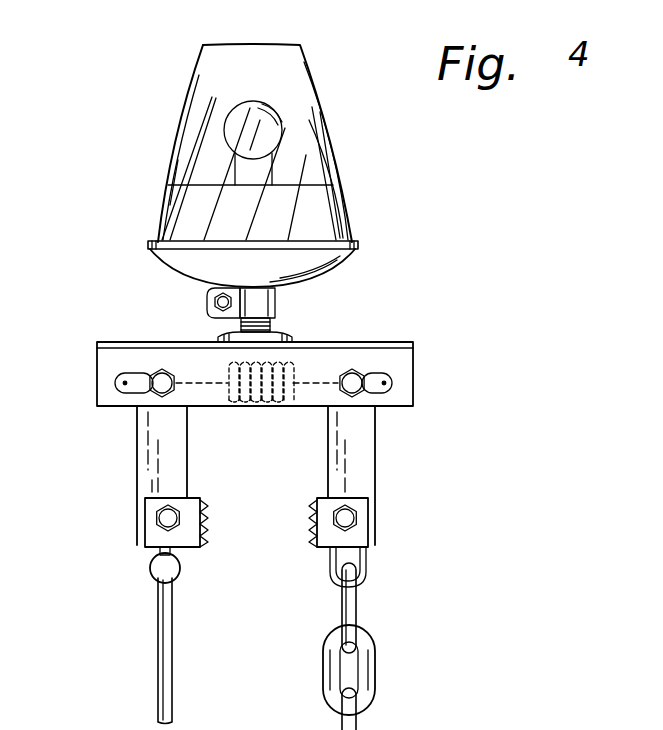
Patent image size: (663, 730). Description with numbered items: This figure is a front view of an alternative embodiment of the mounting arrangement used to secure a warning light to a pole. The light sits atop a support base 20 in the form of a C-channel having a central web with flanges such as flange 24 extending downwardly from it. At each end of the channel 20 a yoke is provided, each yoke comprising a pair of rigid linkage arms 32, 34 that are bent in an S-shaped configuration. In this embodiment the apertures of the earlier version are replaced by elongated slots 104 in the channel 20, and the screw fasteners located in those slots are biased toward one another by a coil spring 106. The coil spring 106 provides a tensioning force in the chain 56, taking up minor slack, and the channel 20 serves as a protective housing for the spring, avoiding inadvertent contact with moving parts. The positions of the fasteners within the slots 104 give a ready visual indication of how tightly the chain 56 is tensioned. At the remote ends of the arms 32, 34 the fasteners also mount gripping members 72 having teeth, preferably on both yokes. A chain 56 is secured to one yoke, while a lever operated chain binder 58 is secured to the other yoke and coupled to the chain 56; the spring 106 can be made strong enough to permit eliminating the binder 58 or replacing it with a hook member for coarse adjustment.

The support base 20 is at (117, 352).
The flange 24 is at (386, 362).
The elongated slot 104 is at (383, 382).
The coil spring 106 is at (279, 412).
The linkage arm 34 is at (137, 455).
The linkage arm 32 is at (371, 463).
The gripping member 72 is at (190, 508).
The chain binder 58 is at (163, 618).
The chain 56 is at (358, 608).